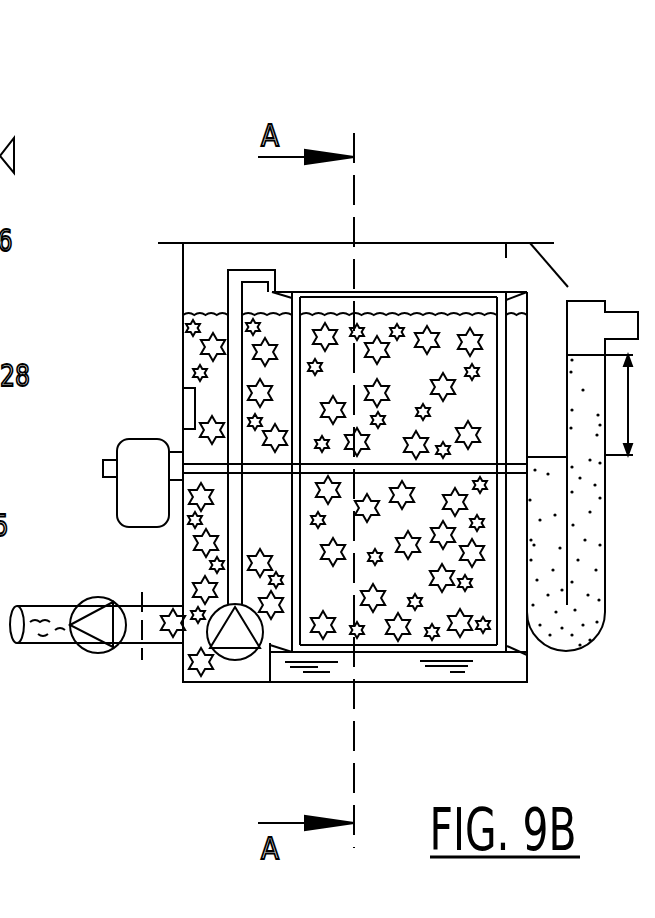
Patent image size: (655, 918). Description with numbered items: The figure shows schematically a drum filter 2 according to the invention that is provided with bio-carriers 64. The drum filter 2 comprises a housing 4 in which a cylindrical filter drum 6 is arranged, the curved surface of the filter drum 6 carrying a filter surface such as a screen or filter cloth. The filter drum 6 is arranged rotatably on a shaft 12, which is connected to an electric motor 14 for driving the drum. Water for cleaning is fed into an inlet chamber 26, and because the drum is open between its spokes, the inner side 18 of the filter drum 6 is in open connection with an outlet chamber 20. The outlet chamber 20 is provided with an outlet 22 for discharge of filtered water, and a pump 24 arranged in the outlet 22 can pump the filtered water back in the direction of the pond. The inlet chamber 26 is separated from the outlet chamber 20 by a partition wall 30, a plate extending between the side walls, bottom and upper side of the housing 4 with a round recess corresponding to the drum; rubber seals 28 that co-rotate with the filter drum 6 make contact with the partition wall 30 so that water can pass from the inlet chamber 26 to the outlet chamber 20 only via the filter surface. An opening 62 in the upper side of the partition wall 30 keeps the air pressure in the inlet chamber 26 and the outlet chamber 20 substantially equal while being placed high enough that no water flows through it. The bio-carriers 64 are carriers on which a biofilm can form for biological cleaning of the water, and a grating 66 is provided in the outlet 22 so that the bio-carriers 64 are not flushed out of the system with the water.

The drum filter 2 is at (188, 122).
The housing 4 is at (460, 242).
The filter drum 6 is at (300, 318).
The shaft 12 is at (200, 465).
The electric motor 14 is at (150, 455).
The inner side of drum 18 is at (425, 386).
The outlet chamber 20 is at (343, 601).
The outlet 22 is at (165, 640).
The pump 24 is at (93, 627).
The inlet chamber 26 is at (408, 668).
The rubber seals 28 is at (512, 290).
The partition wall 30 is at (268, 663).
The opening 62 is at (268, 262).
The bio-carriers 64 is at (208, 345).
The grating 66 is at (140, 660).